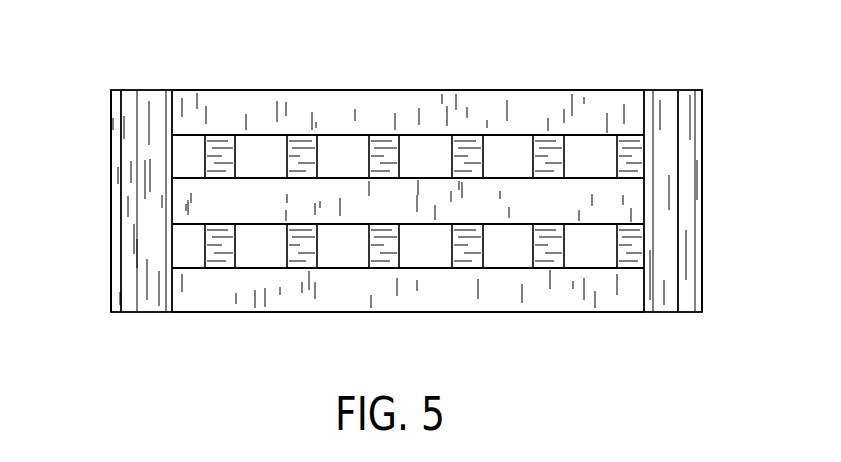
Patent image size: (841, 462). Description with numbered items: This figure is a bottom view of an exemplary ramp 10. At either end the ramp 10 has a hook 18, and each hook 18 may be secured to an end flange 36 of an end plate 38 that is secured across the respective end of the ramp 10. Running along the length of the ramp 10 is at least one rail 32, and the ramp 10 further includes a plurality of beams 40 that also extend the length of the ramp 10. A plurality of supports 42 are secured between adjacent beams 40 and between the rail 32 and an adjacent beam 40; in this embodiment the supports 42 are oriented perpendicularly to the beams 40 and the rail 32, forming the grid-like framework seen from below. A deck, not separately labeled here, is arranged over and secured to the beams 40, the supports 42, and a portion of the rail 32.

The ramp 10 is at (615, 328).
The hook 18 is at (128, 98).
The rail 32 is at (432, 100).
The end flange 36 is at (112, 153).
The end plate 38 is at (155, 98).
The beam 40 is at (370, 197).
The support 42 is at (380, 148).